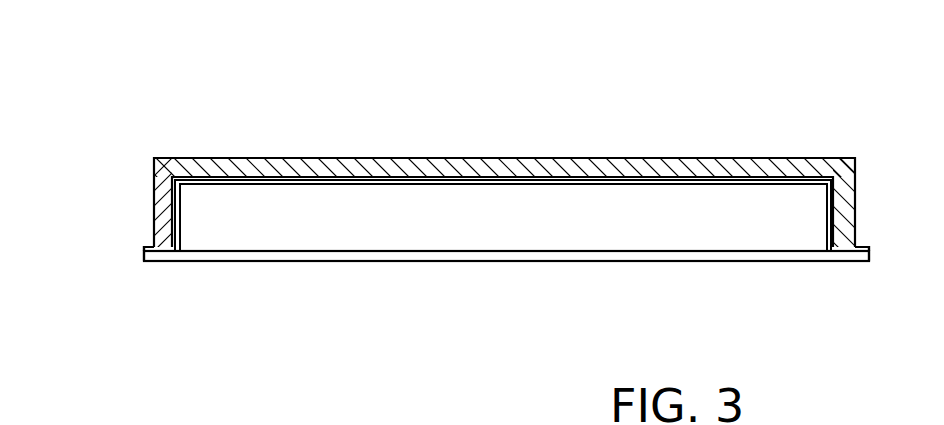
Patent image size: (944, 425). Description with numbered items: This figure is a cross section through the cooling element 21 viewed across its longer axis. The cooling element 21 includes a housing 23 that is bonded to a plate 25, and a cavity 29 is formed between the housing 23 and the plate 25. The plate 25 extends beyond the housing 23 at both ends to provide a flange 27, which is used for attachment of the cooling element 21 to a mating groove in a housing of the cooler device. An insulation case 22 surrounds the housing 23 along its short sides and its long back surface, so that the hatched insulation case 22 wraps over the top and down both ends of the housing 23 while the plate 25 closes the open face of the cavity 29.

The cooling element 21 is at (116, 157).
The insulation case 22 is at (296, 158).
The housing 23 is at (412, 182).
The plate 25 is at (578, 255).
The flange 27 is at (146, 259).
The cavity 29 is at (492, 228).